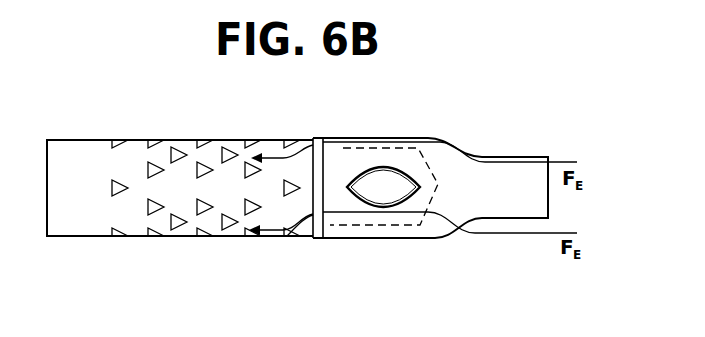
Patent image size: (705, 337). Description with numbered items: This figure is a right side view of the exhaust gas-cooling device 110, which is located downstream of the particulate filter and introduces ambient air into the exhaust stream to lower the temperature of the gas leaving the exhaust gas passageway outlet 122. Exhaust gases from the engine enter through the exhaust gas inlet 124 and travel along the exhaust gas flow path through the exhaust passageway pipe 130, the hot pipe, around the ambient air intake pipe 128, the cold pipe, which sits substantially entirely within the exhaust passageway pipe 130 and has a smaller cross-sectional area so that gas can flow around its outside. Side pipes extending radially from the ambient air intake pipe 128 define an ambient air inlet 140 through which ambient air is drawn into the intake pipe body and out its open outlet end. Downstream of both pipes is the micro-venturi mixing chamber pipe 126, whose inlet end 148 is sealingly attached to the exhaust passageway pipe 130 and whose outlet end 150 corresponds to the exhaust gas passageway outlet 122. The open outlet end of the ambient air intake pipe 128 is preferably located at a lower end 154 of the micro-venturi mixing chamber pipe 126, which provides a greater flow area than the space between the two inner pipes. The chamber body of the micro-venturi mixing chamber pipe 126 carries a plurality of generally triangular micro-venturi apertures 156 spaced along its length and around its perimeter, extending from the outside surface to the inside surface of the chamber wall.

The exhaust gas-cooling device 110 is at (494, 142).
The exhaust gas passageway outlet 122 is at (47, 167).
The exhaust gas inlet 124 is at (549, 197).
The micro-venturi mixing chamber pipe 126 is at (70, 156).
The ambient air intake pipe 128 is at (336, 163).
The exhaust passageway pipe 130 is at (436, 238).
The ambient air inlet 140 is at (382, 208).
The inlet end 148 is at (323, 139).
The outlet end 150 is at (47, 210).
The lower end 154 is at (273, 237).
The micro-venturi apertures 156 is at (153, 236).